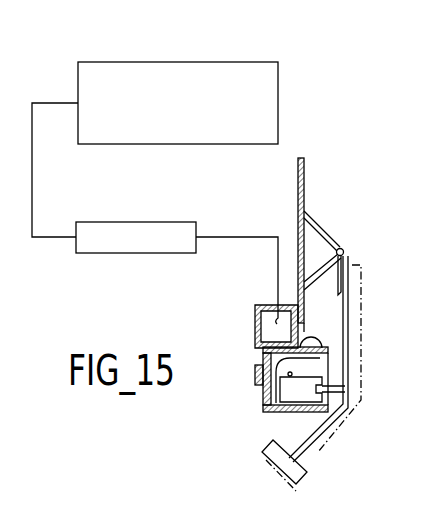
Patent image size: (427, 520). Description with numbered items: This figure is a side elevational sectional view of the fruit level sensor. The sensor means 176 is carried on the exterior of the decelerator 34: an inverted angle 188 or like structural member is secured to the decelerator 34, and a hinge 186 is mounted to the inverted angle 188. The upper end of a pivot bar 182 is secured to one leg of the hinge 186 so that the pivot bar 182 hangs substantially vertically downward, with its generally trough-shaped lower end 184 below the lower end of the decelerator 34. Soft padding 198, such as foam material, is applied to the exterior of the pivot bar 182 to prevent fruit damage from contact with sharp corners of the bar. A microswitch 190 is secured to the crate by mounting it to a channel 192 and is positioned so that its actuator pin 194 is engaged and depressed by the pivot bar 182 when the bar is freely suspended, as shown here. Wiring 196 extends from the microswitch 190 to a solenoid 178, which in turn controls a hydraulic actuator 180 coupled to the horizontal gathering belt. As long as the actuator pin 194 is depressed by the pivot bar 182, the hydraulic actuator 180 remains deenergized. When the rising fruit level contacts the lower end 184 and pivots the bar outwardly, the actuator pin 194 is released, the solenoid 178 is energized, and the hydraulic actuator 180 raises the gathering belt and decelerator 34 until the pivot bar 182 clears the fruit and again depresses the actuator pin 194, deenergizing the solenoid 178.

The hydraulic actuator 180 is at (278, 102).
The solenoid 178 is at (140, 222).
The wiring 196 is at (236, 237).
The decelerator 34 is at (308, 170).
The inverted angle 188 is at (307, 221).
The hinge 186 is at (343, 250).
The sensor means 176 is at (350, 327).
The pivot bar 182 is at (348, 358).
The actuator pin 194 is at (340, 392).
The microswitch 190 is at (291, 394).
The channel 192 is at (263, 353).
The lower end of pivot bar 184 is at (300, 478).
The soft padding 198 is at (334, 437).